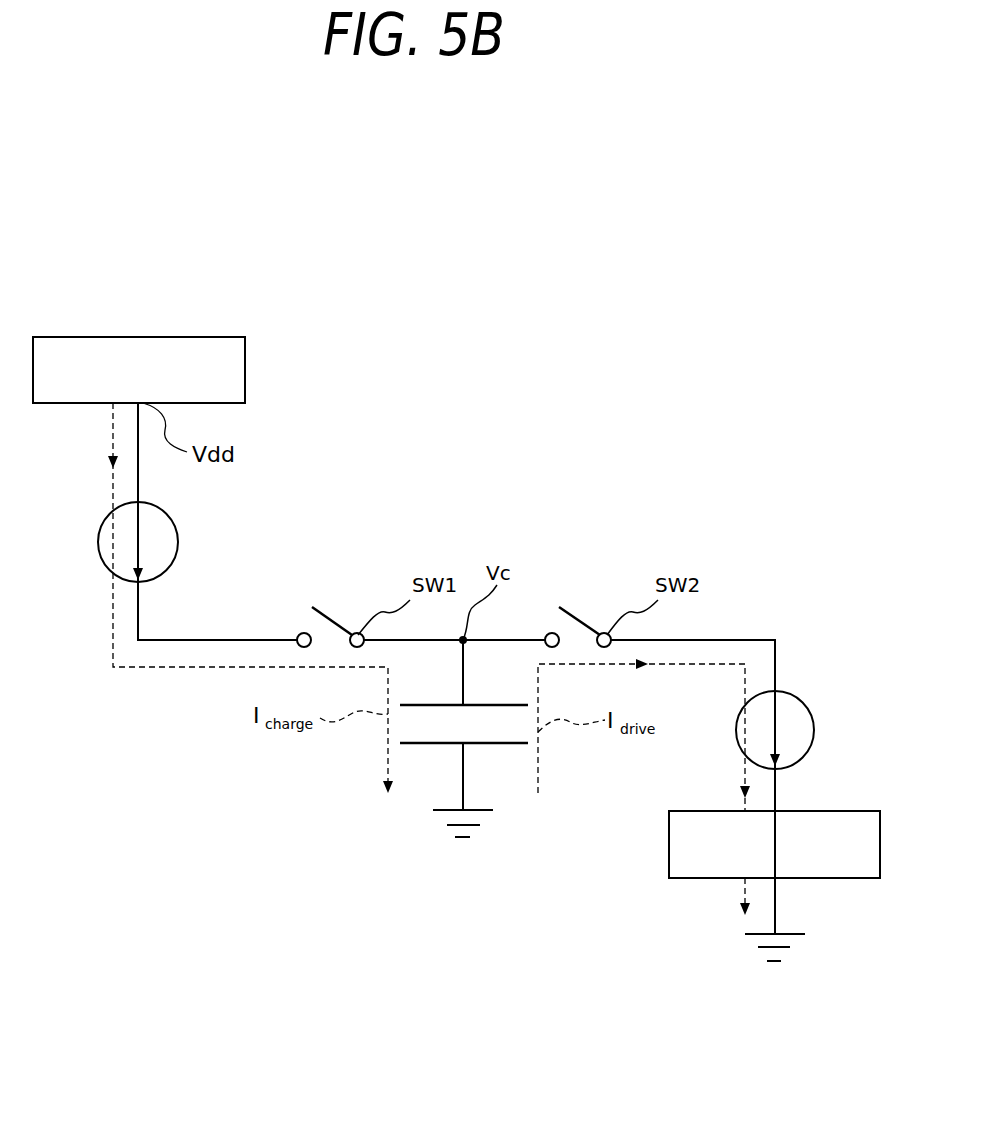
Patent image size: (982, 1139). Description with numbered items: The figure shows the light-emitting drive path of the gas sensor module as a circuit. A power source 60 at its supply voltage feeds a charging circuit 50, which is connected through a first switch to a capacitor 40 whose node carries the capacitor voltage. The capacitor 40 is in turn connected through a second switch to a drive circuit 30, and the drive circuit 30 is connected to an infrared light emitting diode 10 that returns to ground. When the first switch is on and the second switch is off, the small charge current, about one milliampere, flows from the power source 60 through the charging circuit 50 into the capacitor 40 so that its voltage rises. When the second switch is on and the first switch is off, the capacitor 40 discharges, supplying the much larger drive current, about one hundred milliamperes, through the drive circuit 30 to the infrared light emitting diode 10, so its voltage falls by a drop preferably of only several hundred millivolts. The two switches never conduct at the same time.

The power source 60 is at (245, 372).
The charging circuit 50 is at (178, 542).
The capacitor 40 is at (423, 745).
The drive circuit 30 is at (814, 730).
The infrared light emitting diode 10 is at (669, 851).